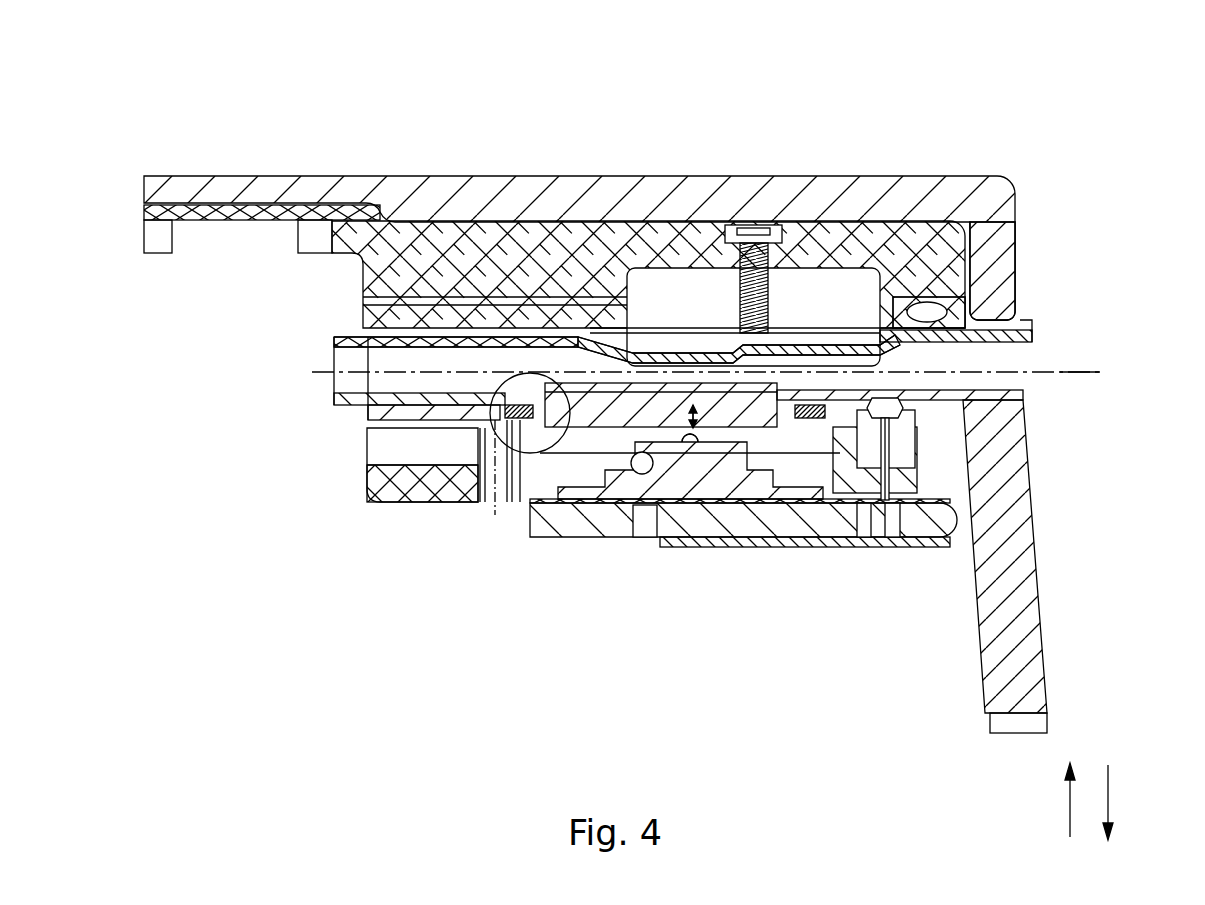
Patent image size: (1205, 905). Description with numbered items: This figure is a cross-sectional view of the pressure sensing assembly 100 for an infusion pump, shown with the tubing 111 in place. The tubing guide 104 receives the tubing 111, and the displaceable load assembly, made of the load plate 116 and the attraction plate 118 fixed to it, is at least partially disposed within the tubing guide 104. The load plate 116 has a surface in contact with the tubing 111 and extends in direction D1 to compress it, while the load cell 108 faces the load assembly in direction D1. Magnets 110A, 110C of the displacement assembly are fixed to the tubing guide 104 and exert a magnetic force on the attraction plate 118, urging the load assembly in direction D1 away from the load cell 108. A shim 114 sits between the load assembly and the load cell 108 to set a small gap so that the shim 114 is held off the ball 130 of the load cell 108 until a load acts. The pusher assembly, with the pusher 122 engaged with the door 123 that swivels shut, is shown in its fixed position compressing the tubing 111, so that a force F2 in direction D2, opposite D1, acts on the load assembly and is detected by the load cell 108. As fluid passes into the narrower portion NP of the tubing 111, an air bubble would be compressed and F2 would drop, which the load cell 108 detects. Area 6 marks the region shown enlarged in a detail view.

The pressure sensing assembly 100 is at (988, 130).
The tubing guide 104 is at (463, 280).
The load cell 108 is at (712, 521).
The magnet 110A is at (528, 470).
The magnet 110C is at (880, 300).
The tubing 111 is at (1028, 330).
The shim 114 is at (604, 427).
The load plate 116 is at (708, 398).
The attraction plate 118 is at (845, 478).
The pusher 122 is at (848, 288).
The door 123 is at (242, 177).
The ball 130 is at (692, 447).
The detail area 6 is at (497, 428).
The narrower portion NP is at (625, 358).
The force F2 is at (695, 428).
The direction D1 is at (1066, 805).
The direction D2 is at (1110, 785).